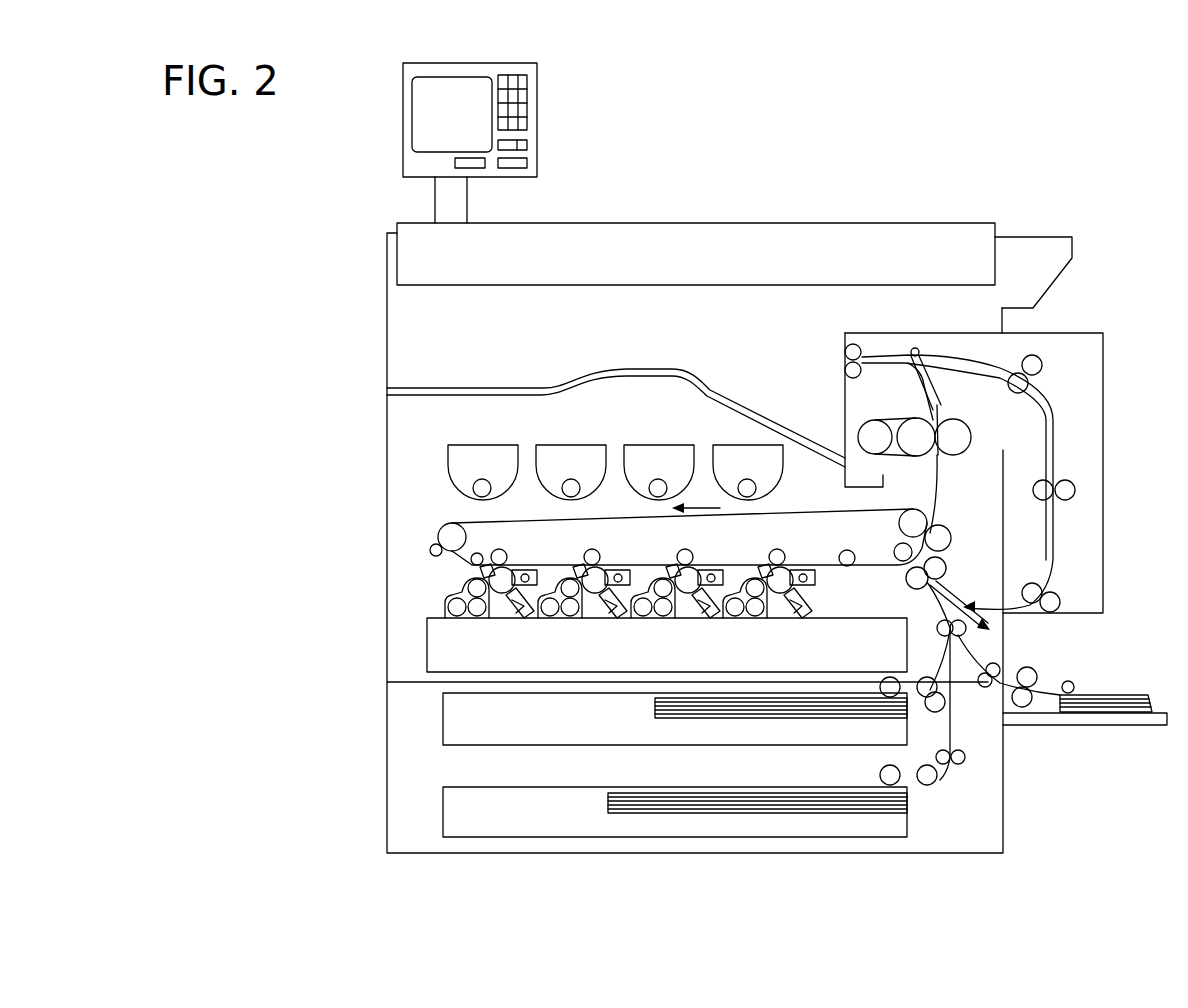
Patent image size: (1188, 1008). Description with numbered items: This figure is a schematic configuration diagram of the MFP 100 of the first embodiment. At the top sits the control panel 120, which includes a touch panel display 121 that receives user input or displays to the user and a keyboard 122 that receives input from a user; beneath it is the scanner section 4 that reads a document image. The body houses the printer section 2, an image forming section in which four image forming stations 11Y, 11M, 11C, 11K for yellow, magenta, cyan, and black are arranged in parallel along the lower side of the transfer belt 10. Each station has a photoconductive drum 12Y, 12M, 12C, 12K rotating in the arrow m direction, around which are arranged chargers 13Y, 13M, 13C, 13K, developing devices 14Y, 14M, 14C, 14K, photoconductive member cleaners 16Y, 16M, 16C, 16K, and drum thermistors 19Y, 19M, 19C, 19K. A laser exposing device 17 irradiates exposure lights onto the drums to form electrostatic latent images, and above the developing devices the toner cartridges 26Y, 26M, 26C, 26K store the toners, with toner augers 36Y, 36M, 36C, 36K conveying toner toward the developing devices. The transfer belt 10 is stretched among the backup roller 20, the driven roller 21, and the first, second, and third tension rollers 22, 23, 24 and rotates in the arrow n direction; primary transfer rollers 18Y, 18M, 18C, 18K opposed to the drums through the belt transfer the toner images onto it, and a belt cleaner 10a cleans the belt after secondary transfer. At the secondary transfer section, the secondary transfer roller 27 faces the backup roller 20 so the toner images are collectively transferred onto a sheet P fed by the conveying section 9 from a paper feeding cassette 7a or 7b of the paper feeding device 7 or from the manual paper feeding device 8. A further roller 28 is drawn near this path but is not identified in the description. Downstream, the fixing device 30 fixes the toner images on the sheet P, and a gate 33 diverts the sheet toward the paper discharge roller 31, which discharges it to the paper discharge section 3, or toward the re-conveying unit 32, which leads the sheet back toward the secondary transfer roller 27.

The MFP 100 is at (866, 214).
The control panel 120 is at (476, 127).
The touch panel display 121 is at (430, 113).
The keyboard 122 is at (530, 107).
The scanner section 4 is at (596, 250).
The paper discharge section 3 is at (418, 347).
The printer section 2 is at (396, 575).
The transfer belt 10 is at (463, 523).
The belt cleaner 10a is at (432, 548).
The driven roller 21 is at (448, 537).
The first tension roller 22 is at (468, 560).
The backup roller 20 is at (902, 524).
The second tension roller 23 is at (847, 566).
The third tension roller 24 is at (905, 568).
The secondary transfer roller 27 is at (950, 532).
The conveyance roller 28 is at (947, 568).
The fixing device 30 is at (945, 456).
The paper discharge roller 31 is at (854, 343).
The re-conveying unit 32 is at (1001, 459).
The gate 33 is at (919, 346).
The conveying section 9 is at (980, 643).
The manual paper feeding device 8 is at (1117, 658).
The laser exposing device 17 is at (912, 640).
The paper feeding device 7 is at (622, 765).
The paper feeding cassette 7a is at (443, 717).
The paper feeding cassette 7b is at (443, 812).
The image forming station 11Y is at (448, 585).
The image forming station 11M is at (588, 611).
The image forming station 11C is at (679, 624).
The image forming station 11K is at (773, 580).
The photoconductive drum 12Y is at (511, 566).
The photoconductive drum 12M is at (604, 568).
The photoconductive drum 12C is at (698, 568).
The photoconductive drum 12K is at (790, 568).
The charger 13Y is at (518, 618).
The charger 13M is at (612, 618).
The charger 13C is at (700, 618).
The charger 13K is at (795, 618).
The developing device 14Y is at (444, 618).
The developing device 14M is at (537, 618).
The developing device 14C is at (628, 618).
The developing device 14K is at (722, 618).
The photoconductive member cleaner 16Y is at (530, 568).
The photoconductive member cleaner 16M is at (623, 570).
The photoconductive member cleaner 16C is at (715, 571).
The photoconductive member cleaner 16K is at (805, 572).
The primary transfer roller 18Y is at (500, 548).
The primary transfer roller 18M is at (594, 548).
The primary transfer roller 18C is at (686, 549).
The primary transfer roller 18K is at (777, 549).
The drum thermistor 19Y is at (482, 571).
The drum thermistor 19M is at (580, 565).
The drum thermistor 19C is at (673, 565).
The drum thermistor 19K is at (758, 566).
The toner cartridge 26Y is at (482, 458).
The toner cartridge 26M is at (570, 458).
The toner cartridge 26C is at (668, 458).
The toner cartridge 26K is at (728, 458).
The toner auger 36Y is at (476, 482).
The toner auger 36M is at (565, 483).
The toner auger 36C is at (652, 484).
The toner auger 36K is at (756, 486).
The arrow m direction m is at (496, 612).
The arrow n direction n is at (702, 500).
The sheet P is at (1127, 688).